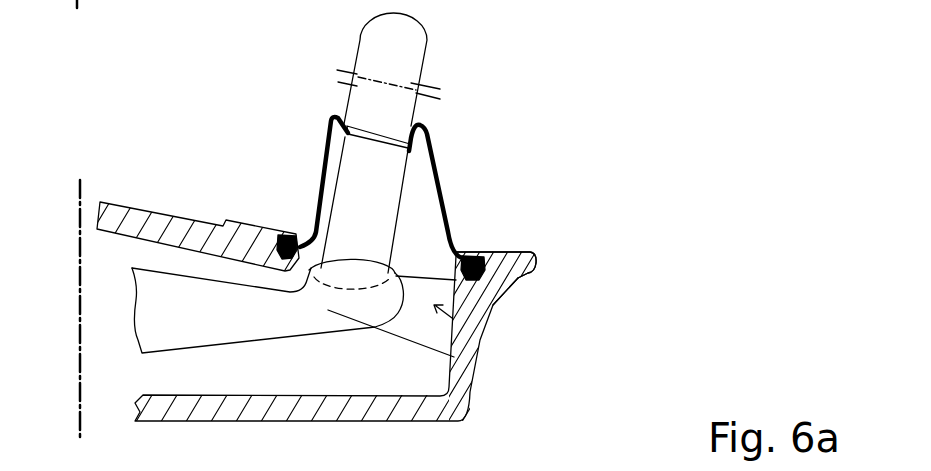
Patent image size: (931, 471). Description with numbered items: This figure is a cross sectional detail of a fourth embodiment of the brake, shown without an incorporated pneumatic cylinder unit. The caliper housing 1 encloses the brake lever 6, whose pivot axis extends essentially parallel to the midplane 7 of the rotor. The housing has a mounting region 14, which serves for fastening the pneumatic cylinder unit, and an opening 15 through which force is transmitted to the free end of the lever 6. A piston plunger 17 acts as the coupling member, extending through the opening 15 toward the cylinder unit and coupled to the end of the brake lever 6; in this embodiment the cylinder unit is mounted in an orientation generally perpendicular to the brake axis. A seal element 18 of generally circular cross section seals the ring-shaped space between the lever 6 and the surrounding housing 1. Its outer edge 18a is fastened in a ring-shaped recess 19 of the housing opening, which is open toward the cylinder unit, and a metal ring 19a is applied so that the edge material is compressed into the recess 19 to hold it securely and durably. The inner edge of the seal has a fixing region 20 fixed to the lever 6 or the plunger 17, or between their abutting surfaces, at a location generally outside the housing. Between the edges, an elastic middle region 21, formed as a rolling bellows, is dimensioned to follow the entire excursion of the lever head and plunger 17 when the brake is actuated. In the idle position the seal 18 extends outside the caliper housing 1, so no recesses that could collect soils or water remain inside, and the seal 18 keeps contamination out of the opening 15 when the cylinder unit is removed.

The caliper housing 1 is at (463, 390).
The brake lever 6 is at (468, 372).
The midplane of the rotor 7 is at (78, 213).
The mounting region 14 is at (290, 230).
The opening 15 is at (473, 327).
The piston plunger 17 is at (383, 55).
The seal element 18 is at (435, 190).
The outer edge of the seal 18a is at (480, 250).
The ring-shaped recess 19 is at (522, 278).
The metal ring 19a is at (490, 292).
The fixing region 20 is at (330, 143).
The elastic middle region 21 is at (447, 188).